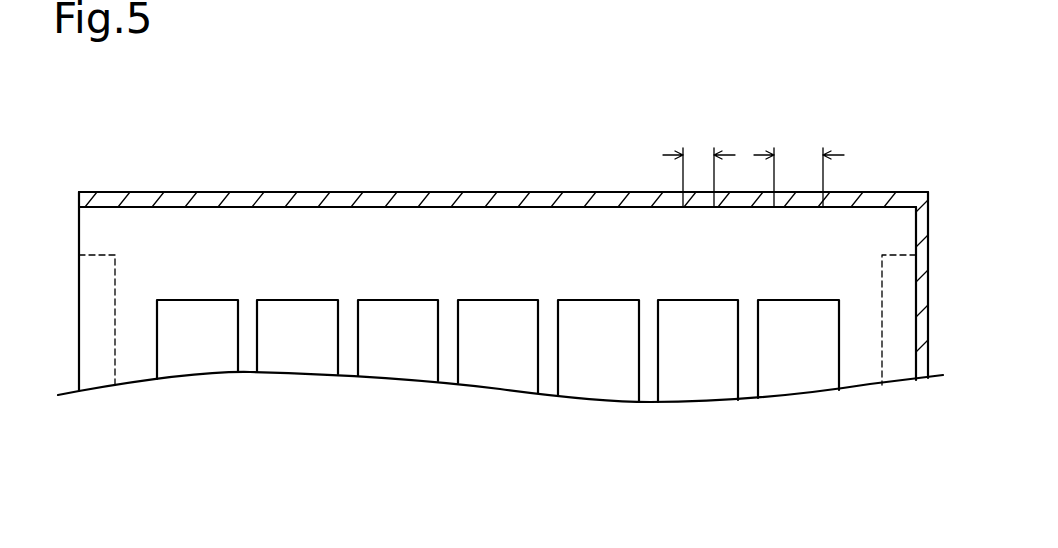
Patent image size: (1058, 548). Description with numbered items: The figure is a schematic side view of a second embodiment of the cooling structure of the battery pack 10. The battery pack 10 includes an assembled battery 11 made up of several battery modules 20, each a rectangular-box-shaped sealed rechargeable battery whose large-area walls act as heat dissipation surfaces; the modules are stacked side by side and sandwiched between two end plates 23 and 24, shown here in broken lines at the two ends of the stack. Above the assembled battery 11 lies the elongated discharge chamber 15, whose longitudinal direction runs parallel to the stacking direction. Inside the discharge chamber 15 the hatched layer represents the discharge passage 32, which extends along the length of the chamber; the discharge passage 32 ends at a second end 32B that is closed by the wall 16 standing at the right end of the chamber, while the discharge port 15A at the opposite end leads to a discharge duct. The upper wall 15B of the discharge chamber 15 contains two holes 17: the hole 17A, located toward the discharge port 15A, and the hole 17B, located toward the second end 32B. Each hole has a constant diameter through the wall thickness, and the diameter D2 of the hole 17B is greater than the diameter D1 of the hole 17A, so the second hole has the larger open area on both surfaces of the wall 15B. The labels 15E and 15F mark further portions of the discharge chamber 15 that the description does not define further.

The battery pack 10 is at (125, 115).
The assembled battery 11 is at (157, 300).
The discharge chamber 15 is at (863, 192).
The discharge port 15A is at (79, 230).
The wall 15B is at (253, 192).
The top surface portion of cover 15E is at (517, 192).
The top surface portion between grooves 15F is at (752, 192).
The wall 16 is at (928, 263).
The holes 17 is at (715, 233).
The hole 17A is at (688, 207).
The hole 17B is at (779, 207).
The battery module 20 is at (712, 300).
The end plate 23 is at (97, 315).
The end plate 24 is at (903, 299).
The discharge passage 32 is at (383, 220).
The second end 32B is at (916, 230).
The diameter of the hole 17A D1 is at (699, 148).
The diameter of the hole 17B D2 is at (799, 148).